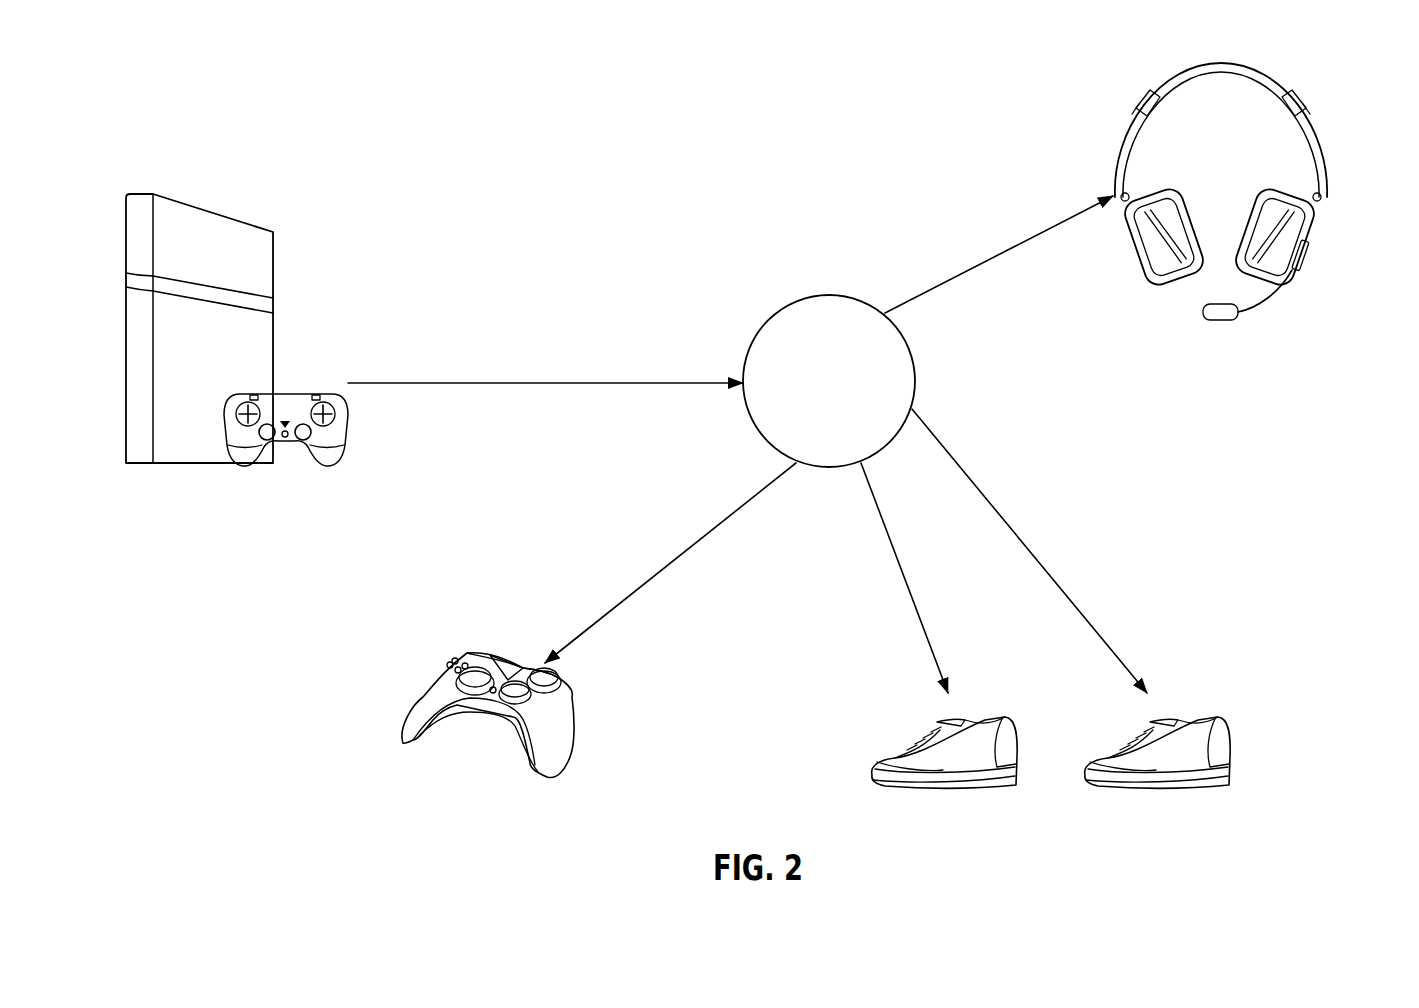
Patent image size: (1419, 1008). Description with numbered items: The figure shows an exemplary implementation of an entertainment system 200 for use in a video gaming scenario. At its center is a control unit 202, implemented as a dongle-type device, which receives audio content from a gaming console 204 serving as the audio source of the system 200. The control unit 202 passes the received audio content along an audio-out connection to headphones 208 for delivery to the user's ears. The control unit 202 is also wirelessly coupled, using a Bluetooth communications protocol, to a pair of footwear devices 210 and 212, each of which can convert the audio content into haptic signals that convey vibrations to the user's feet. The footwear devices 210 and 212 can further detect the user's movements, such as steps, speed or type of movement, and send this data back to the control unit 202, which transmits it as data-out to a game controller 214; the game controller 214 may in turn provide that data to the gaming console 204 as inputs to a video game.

The entertainment system 200 is at (225, 82).
The control unit 202 is at (915, 367).
The gaming console 204 is at (190, 205).
The headphones 208 is at (1316, 218).
The footwear device 210 is at (1017, 752).
The footwear device 212 is at (1230, 752).
The game controller 214 is at (572, 700).